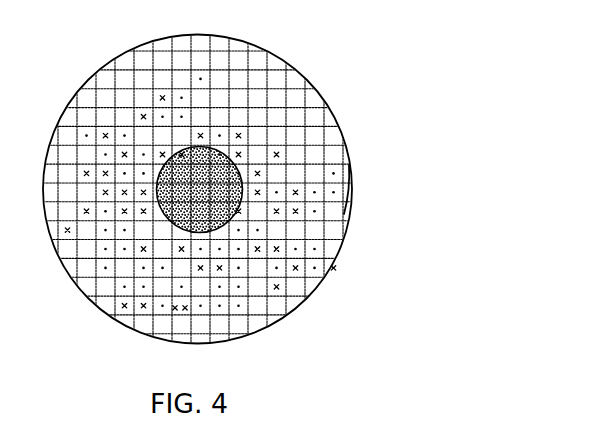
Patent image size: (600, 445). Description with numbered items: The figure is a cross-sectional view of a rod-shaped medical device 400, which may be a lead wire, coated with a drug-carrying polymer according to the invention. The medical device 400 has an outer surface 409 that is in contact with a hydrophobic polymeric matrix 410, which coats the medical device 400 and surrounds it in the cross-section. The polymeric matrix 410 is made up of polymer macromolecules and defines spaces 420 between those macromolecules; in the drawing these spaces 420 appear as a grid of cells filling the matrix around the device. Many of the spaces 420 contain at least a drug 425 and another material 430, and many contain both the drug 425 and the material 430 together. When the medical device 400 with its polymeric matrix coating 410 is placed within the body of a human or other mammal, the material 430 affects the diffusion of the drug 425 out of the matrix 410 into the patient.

The rod-shaped medical device 400 is at (200, 153).
The outer surface 409 is at (229, 158).
The hydrophobic polymeric matrix 410 is at (348, 172).
The spaces 420 is at (346, 189).
The drug 425 is at (316, 248).
The material 430 is at (296, 272).